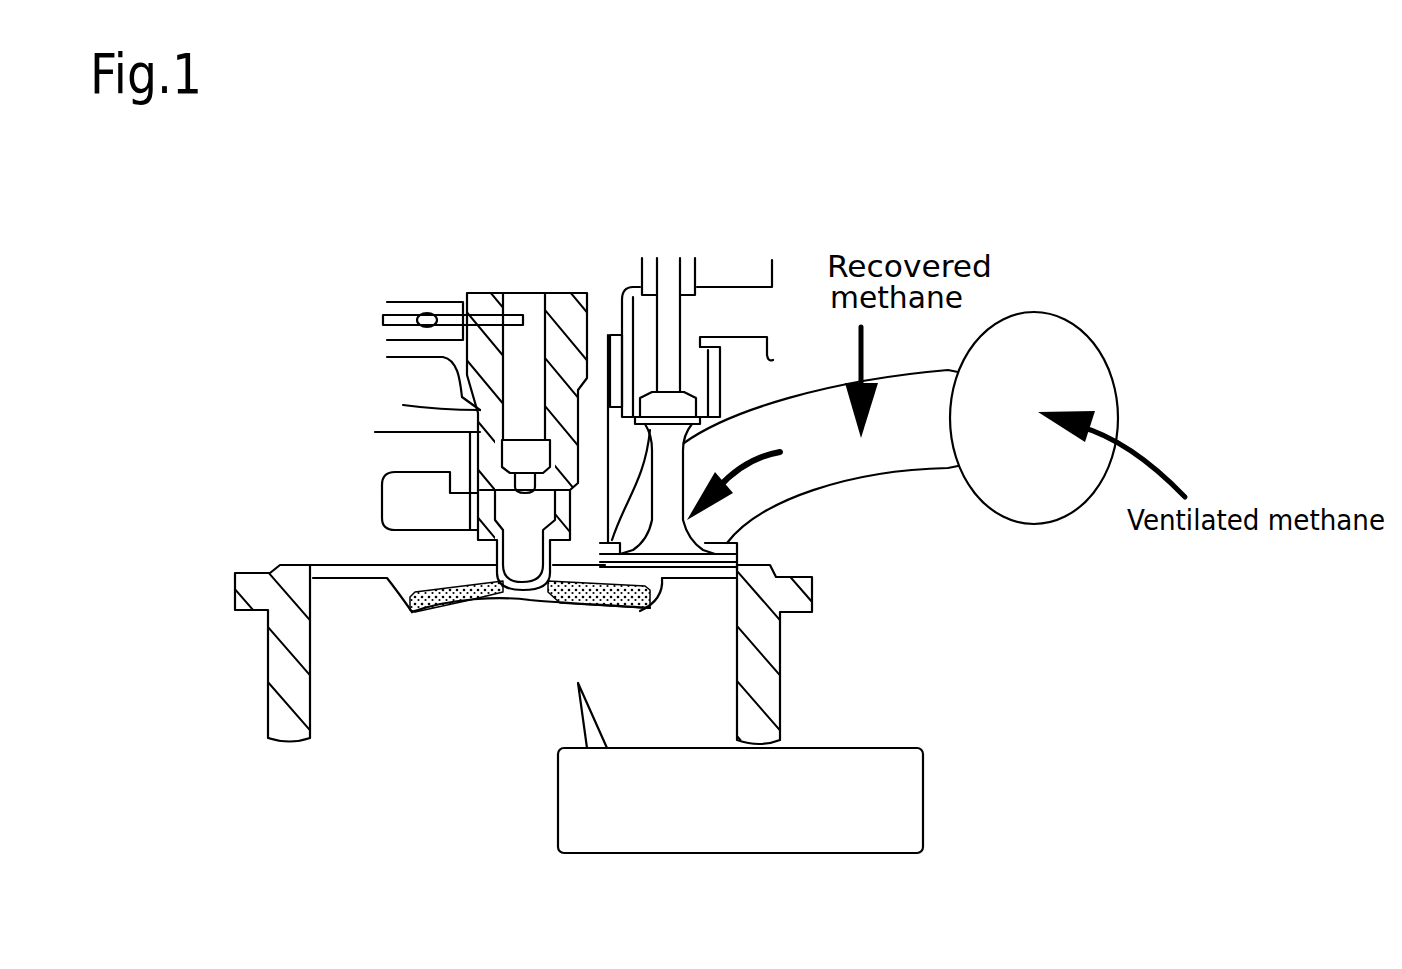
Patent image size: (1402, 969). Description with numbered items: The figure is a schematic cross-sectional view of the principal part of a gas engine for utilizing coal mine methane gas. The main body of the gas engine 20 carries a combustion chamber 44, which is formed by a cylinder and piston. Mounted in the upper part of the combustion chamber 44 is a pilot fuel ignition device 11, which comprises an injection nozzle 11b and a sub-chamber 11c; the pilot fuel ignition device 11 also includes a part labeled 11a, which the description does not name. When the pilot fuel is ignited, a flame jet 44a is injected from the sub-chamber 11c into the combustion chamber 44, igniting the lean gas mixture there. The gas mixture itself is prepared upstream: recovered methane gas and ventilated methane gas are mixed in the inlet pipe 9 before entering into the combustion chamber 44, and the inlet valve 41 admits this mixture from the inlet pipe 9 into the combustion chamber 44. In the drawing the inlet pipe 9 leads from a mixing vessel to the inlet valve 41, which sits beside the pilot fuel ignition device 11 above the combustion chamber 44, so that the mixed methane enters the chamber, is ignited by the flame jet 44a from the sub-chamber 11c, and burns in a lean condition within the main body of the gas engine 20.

The inlet pipe 9 is at (1025, 317).
The pilot fuel ignition device 11 is at (552, 252).
The injector electrical connector 11a is at (385, 320).
The injection nozzle 11b is at (510, 454).
The sub-chamber 11c is at (490, 520).
The main body of a gas engine 20 is at (246, 664).
The inlet valve 41 is at (672, 467).
The combustion chamber 44 is at (528, 688).
The flame jet 44a is at (432, 615).